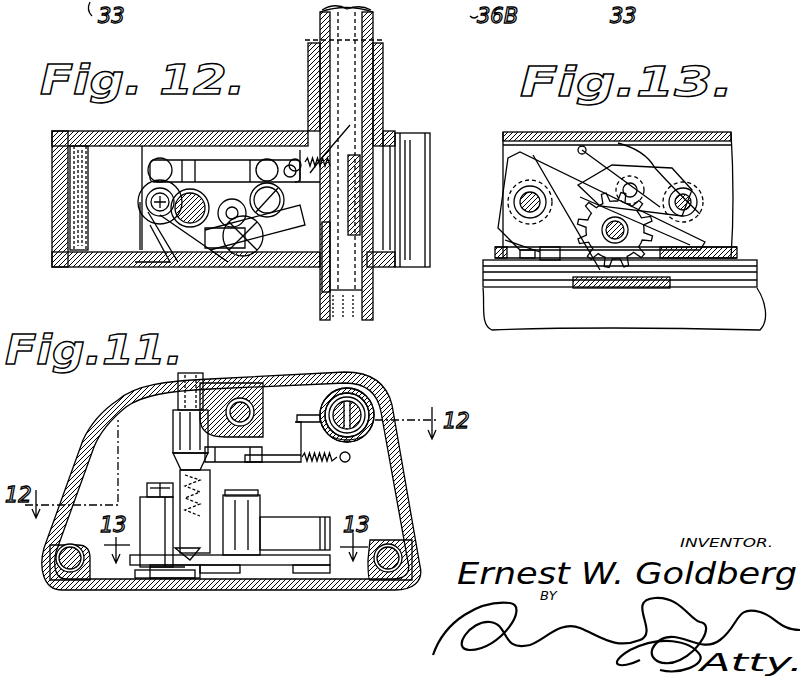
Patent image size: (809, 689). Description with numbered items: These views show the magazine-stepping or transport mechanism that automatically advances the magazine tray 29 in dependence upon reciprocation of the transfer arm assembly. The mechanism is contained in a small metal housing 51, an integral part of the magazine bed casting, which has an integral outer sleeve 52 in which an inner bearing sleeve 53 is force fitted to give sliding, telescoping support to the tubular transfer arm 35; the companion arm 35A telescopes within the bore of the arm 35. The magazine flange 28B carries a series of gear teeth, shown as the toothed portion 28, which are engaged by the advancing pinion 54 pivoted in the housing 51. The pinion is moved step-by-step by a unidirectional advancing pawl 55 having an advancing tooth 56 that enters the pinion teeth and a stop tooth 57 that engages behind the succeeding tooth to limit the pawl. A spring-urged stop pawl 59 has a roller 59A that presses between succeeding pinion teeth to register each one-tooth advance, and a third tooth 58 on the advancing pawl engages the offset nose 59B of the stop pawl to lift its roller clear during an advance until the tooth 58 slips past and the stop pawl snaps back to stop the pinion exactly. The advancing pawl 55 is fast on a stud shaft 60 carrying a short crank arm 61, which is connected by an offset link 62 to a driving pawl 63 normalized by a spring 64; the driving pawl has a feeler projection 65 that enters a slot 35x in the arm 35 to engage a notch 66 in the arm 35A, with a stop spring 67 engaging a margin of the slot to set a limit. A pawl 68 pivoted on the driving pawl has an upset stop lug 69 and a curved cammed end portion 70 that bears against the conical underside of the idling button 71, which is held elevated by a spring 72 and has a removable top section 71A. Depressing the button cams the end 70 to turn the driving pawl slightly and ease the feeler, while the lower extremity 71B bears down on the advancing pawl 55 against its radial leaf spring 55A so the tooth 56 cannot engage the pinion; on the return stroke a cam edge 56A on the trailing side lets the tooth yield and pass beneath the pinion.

In FIG. 13, the magazine flange portion 28 is at (645, 278).
In FIG. 13, the flange 28B is at (735, 280).
In FIG. 13, the magazine tray 29 is at (682, 333).
In FIG. 12, the transfer arm 35 is at (375, 305).
In FIG. 11, the transfer arm 35 is at (367, 405).
In FIG. 12, the companion arm 35A is at (358, 11).
In FIG. 11, the companion arm 35A is at (373, 422).
In FIG. 12, the slot 35x is at (300, 160).
In FIG. 11, the slot 35x is at (322, 398).
In FIG. 12, the housing 51 is at (397, 235).
In FIG. 12, the outer sleeve 52 is at (383, 75).
In FIG. 12, the inner bearing sleeve 53 is at (376, 36).
In FIG. 12, the advancing pinion 54 is at (250, 265).
In FIG. 13, the advancing pinion 54 is at (670, 222).
In FIG. 11, the advancing pinion 54 is at (230, 557).
In FIG. 12, the advancing pawl 55 is at (135, 232).
In FIG. 13, the advancing pawl 55 is at (504, 222).
In FIG. 11, the advancing pawl 55 is at (130, 578).
In FIG. 13, the radial leaf spring 55A is at (503, 252).
In FIG. 11, the radial leaf spring 55A is at (183, 567).
In FIG. 13, the advancing tooth 56 is at (560, 252).
In FIG. 13, the cam edge 56A is at (650, 230).
In FIG. 13, the stop tooth 57 is at (540, 250).
In FIG. 11, the stop tooth 57 is at (180, 573).
In FIG. 13, the third tooth 58 is at (530, 202).
In FIG. 13, the stop pawl 59 is at (683, 200).
In FIG. 11, the stop pawl 59 is at (287, 552).
In FIG. 13, the roller 59A is at (630, 184).
In FIG. 13, the offset nose 59B is at (582, 147).
In FIG. 12, the stud shaft 60 is at (150, 202).
In FIG. 11, the stud shaft 60 is at (150, 470).
In FIG. 12, the crank arm 61 is at (150, 187).
In FIG. 11, the crank arm 61 is at (147, 493).
In FIG. 12, the offset link 62 is at (202, 163).
In FIG. 11, the offset link 62 is at (265, 392).
In FIG. 12, the driving pawl 63 is at (305, 150).
In FIG. 11, the driving pawl 63 is at (295, 455).
In FIG. 12, the spring 64 is at (350, 125).
In FIG. 11, the spring 64 is at (328, 462).
In FIG. 12, the feeler projection 65 is at (313, 207).
In FIG. 12, the notch 66 is at (360, 215).
In FIG. 11, the notch 66 is at (340, 405).
In FIG. 12, the stop spring 67 is at (417, 167).
In FIG. 11, the stop spring 67 is at (370, 413).
In FIG. 12, the pawl 68 is at (200, 260).
In FIG. 11, the pawl 68 is at (198, 488).
In FIG. 12, the stop lug 69 is at (222, 270).
In FIG. 11, the stop lug 69 is at (255, 460).
In FIG. 12, the cammed end portion 70 is at (158, 258).
In FIG. 11, the cammed end portion 70 is at (168, 466).
In FIG. 11, the idling button 71 is at (173, 432).
In FIG. 11, the removable top section 71A is at (182, 382).
In FIG. 11, the lower extremity 71B is at (190, 552).
In FIG. 11, the spring 72 is at (192, 552).